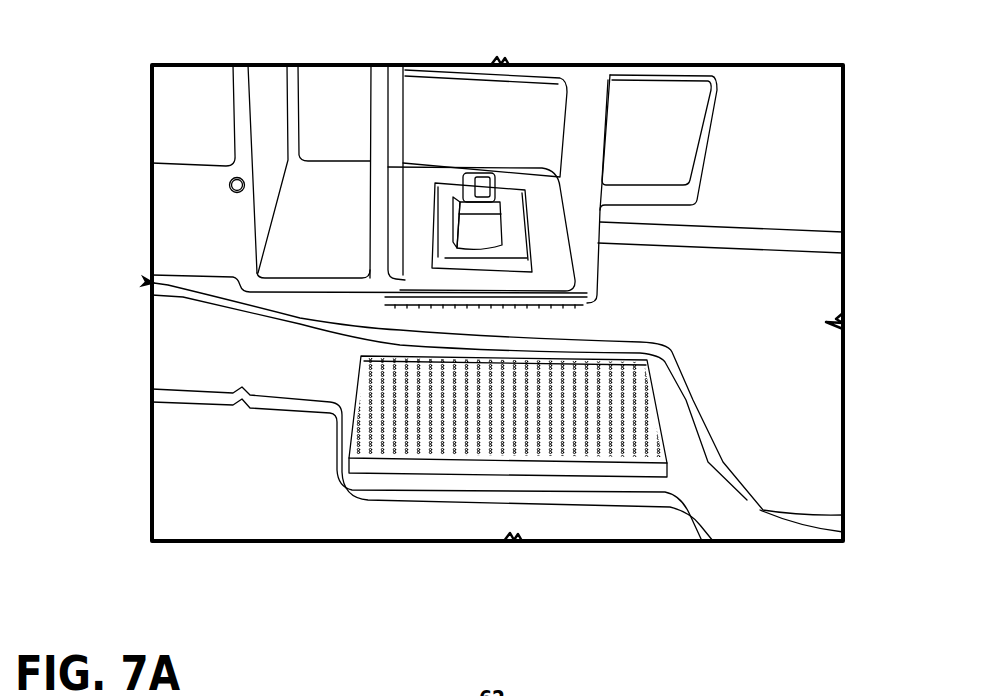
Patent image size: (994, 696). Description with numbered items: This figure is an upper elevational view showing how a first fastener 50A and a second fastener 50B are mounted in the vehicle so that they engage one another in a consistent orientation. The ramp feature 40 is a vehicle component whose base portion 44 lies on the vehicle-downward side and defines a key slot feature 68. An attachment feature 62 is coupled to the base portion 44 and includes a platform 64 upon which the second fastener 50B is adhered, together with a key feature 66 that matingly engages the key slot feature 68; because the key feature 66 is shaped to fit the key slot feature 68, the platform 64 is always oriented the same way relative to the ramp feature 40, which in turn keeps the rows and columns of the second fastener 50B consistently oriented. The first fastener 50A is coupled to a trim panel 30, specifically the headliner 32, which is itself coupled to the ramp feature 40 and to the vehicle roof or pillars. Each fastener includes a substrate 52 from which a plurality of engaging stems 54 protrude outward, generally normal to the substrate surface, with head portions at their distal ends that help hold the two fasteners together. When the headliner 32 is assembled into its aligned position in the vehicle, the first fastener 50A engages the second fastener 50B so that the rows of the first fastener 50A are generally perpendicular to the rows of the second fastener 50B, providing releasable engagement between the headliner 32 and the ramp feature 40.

The trim panel 30 is at (212, 374).
The headliner 32 is at (312, 374).
The ramp feature 40 is at (203, 225).
The base portion 44 is at (543, 300).
The first fastener 50A is at (670, 455).
The second fastener 50B is at (583, 304).
The substrate 52 is at (385, 298).
The engaging stems 54 is at (385, 301).
The attachment feature 62 is at (506, 219).
The platform 64 is at (427, 296).
The key feature 66 is at (473, 230).
The key slot feature 68 is at (504, 246).